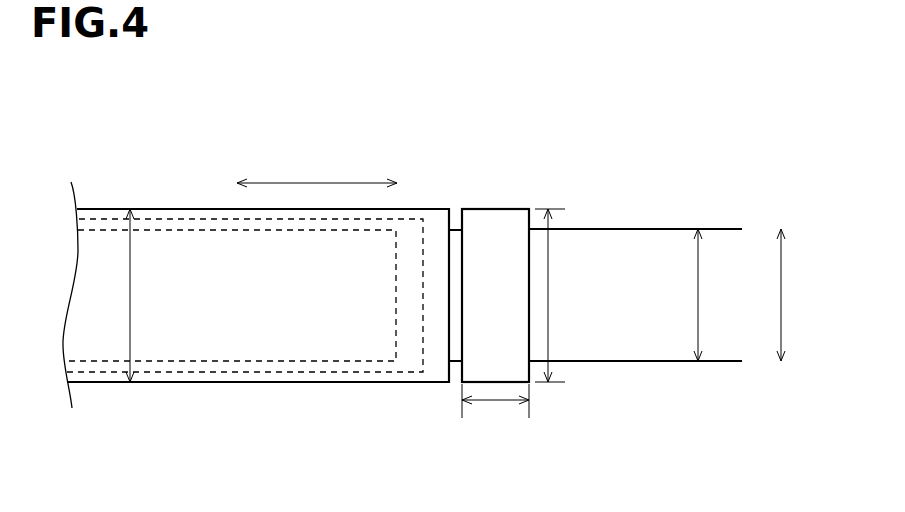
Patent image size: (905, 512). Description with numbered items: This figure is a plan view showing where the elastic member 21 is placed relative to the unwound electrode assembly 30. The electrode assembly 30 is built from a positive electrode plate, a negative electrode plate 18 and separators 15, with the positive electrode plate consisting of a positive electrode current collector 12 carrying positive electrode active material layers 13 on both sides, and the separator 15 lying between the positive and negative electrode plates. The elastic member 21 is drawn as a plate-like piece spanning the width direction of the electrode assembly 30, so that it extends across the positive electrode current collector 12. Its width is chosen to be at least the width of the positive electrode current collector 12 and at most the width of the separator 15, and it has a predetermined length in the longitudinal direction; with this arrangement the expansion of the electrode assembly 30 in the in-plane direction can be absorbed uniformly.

The electrode assembly 30 is at (423, 102).
The elastic member 21 is at (494, 209).
The positive electrode current collector 12 is at (643, 361).
The positive electrode active material layer 13 is at (360, 362).
The separator 15 is at (277, 382).
The negative electrode plate 18 is at (193, 372).